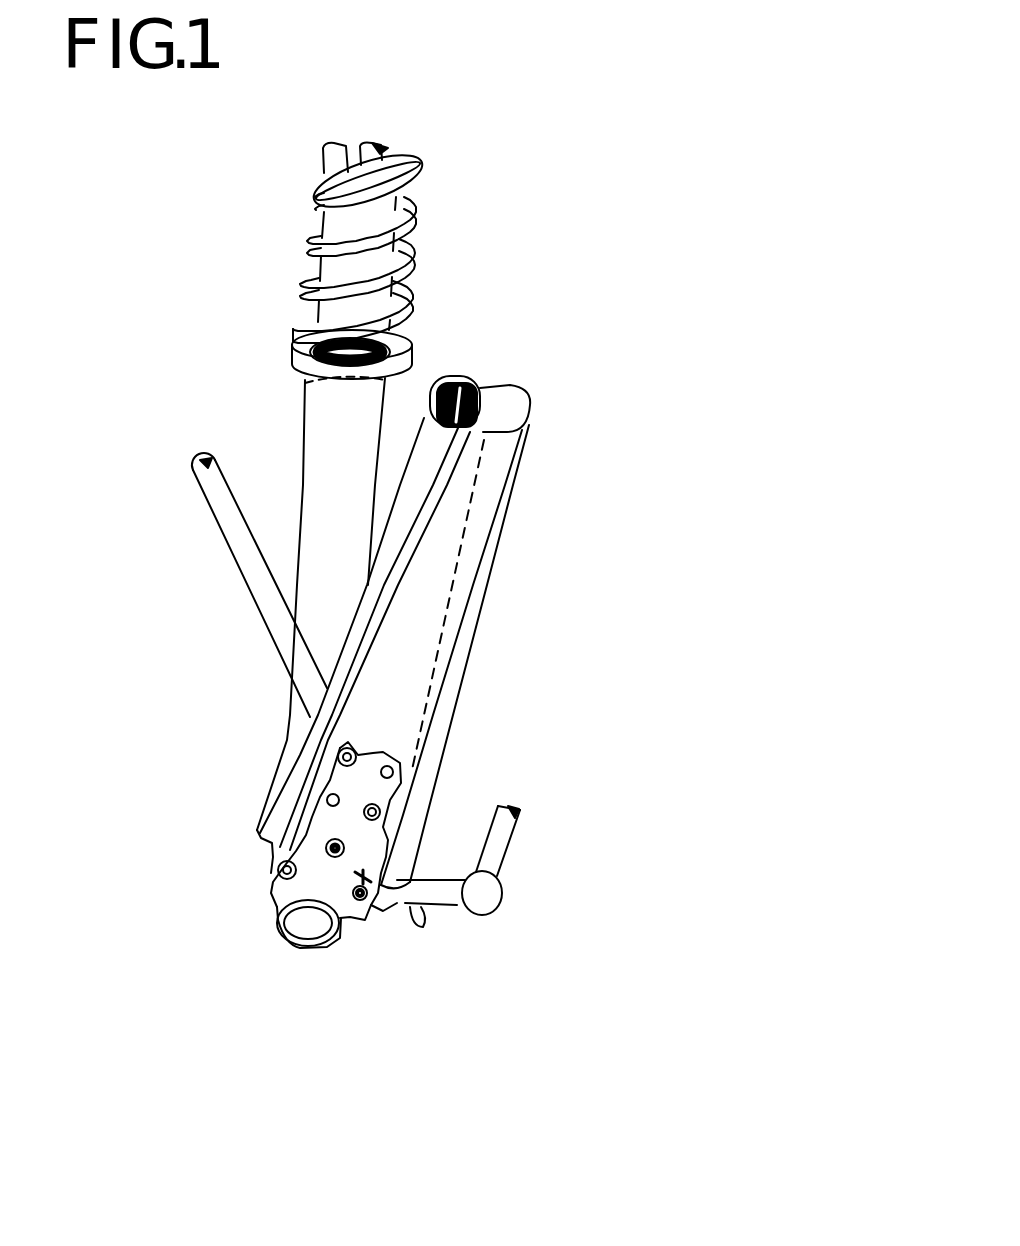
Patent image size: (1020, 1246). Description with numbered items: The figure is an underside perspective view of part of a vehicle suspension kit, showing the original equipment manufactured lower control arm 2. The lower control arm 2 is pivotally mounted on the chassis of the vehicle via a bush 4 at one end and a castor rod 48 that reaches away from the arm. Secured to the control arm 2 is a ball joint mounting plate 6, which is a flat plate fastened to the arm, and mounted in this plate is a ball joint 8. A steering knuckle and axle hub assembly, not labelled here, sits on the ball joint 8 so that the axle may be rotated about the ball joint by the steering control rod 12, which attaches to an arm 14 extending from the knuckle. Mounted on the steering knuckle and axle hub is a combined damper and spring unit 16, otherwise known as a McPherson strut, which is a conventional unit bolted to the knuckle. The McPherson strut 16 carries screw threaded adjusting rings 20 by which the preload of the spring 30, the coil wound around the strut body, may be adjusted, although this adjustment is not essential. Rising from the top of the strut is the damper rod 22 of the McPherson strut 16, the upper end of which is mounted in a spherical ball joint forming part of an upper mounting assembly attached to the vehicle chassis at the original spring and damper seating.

The lower control arm 2 is at (469, 709).
The bush 4 is at (520, 402).
The ball joint mounting plate 6 is at (420, 912).
The ball joint 8 is at (316, 932).
The steering control rod 12 is at (503, 905).
The arm 14 is at (457, 908).
The combined damper and spring unit 16 is at (422, 322).
The screw threaded adjusting rings 20 is at (292, 360).
The damper rod 22 is at (357, 190).
The spring 30 is at (424, 245).
The castor rod 48 is at (275, 641).